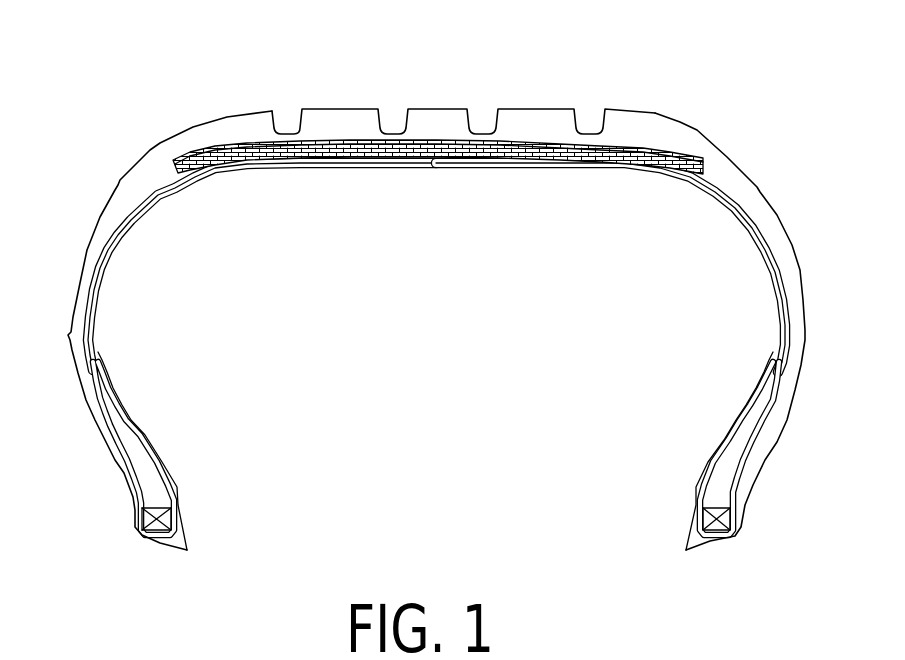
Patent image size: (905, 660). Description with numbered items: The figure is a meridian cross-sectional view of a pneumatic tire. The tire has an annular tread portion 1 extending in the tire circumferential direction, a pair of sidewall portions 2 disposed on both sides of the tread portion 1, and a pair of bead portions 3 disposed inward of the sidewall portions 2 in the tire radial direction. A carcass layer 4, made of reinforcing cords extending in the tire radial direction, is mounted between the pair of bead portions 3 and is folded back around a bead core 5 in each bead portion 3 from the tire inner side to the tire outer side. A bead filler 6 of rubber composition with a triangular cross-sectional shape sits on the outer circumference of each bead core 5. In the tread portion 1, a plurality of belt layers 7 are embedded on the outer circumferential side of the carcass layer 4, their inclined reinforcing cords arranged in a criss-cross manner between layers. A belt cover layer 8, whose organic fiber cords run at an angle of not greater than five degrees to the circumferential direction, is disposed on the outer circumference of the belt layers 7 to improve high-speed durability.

The tread portion 1 is at (538, 106).
The sidewall portion 2 is at (88, 247).
The bead portion 3 is at (130, 507).
The carcass layer 4 is at (729, 200).
The bead core 5 is at (167, 518).
The bead filler 6 is at (150, 483).
The belt layer 7 is at (565, 154).
The belt cover layer 8 is at (610, 147).